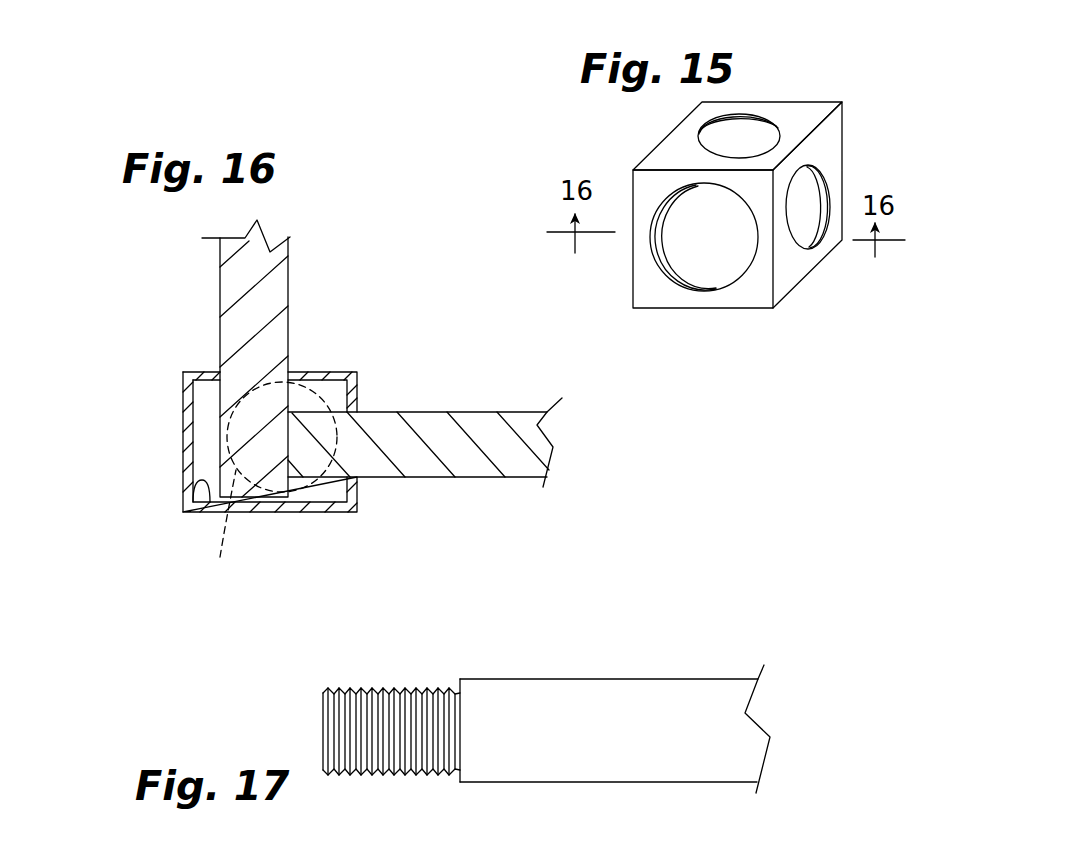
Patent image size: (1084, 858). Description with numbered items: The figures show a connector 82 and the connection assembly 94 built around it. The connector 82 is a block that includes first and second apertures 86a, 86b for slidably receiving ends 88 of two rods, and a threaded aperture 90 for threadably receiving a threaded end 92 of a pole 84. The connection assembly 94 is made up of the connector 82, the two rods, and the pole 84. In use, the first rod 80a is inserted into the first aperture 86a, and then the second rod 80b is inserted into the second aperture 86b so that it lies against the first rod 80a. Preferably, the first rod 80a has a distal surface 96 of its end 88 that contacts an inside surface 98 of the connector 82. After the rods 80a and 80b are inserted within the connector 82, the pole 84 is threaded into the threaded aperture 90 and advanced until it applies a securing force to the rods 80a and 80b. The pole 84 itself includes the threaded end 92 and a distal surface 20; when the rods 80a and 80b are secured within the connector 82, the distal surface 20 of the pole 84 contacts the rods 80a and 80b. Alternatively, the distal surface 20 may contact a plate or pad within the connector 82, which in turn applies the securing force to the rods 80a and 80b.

In FIG. 15, the connector 82 is at (756, 66).
In FIG. 16, the connector 82 is at (183, 442).
In FIG. 15, the first aperture 86a is at (770, 127).
In FIG. 15, the second aperture 86b is at (817, 246).
In FIG. 15, the threaded aperture 90 is at (682, 284).
In FIG. 16, the connection assembly 94 is at (143, 308).
In FIG. 16, the first rod 80a is at (288, 292).
In FIG. 16, the second rod 80b is at (437, 410).
In FIG. 16, the end 88 is at (288, 358).
In FIG. 16, the distal surface 96 is at (250, 492).
In FIG. 16, the inside surface 98 is at (196, 497).
In FIG. 16, the pole 84 is at (230, 532).
In FIG. 17, the pole 84 is at (618, 680).
In FIG. 17, the threaded end 92 is at (417, 690).
In FIG. 17, the distal surface 20 is at (327, 733).